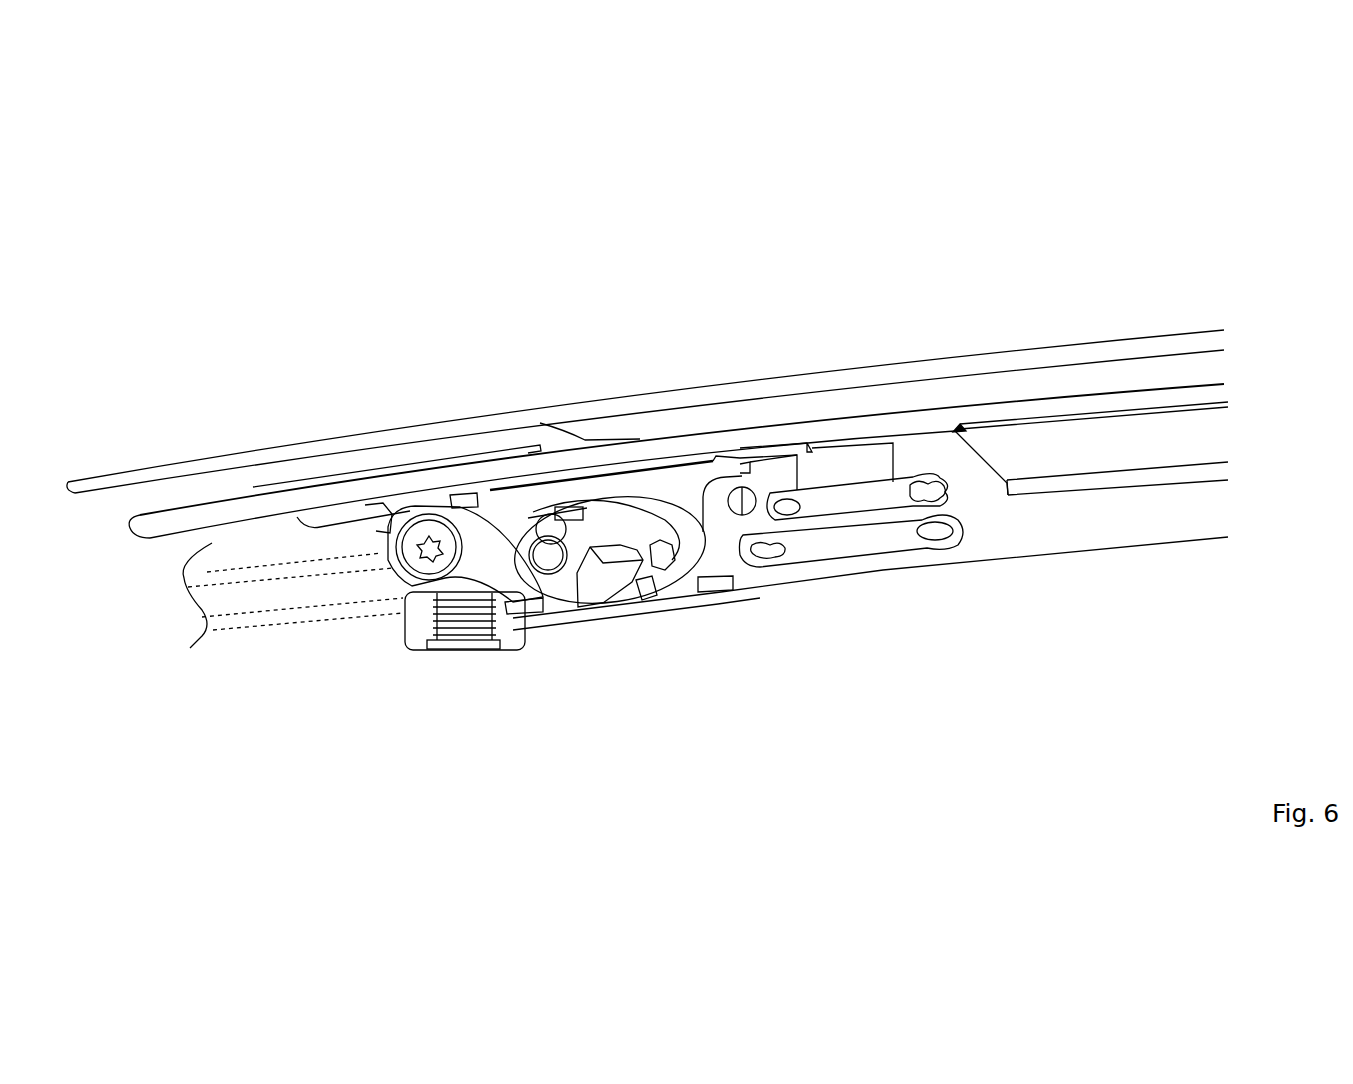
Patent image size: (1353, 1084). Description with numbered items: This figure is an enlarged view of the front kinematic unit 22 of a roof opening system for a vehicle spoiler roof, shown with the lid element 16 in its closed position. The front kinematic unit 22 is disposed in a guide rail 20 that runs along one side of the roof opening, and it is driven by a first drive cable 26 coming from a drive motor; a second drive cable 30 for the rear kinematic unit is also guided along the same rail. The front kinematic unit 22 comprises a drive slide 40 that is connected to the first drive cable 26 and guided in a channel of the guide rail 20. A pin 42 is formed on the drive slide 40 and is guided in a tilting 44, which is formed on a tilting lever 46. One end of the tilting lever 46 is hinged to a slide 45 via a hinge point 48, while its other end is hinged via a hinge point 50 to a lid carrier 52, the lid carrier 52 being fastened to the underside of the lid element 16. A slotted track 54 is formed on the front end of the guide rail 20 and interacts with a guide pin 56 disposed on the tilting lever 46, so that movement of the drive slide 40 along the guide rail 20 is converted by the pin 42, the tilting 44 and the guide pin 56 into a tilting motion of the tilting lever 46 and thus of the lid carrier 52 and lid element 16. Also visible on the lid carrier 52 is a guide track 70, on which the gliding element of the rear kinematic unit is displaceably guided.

The lid element 16 is at (587, 396).
The guide rail 20 is at (618, 615).
The front first kinematic unit 22 is at (718, 599).
The first drive cable 26 is at (212, 578).
The second drive cable 30 is at (333, 613).
The drive slide 40 is at (827, 465).
The pin 42 is at (555, 525).
The tilting 44 is at (590, 522).
The slide 45 is at (768, 470).
The tilting lever 46 is at (477, 528).
The hinge point 48 is at (748, 528).
The hinge point 50 is at (433, 540).
The lid carrier 52 is at (938, 453).
The slotted track 54 is at (672, 506).
The guide pin 56 is at (622, 570).
The guide track 70 is at (1078, 472).